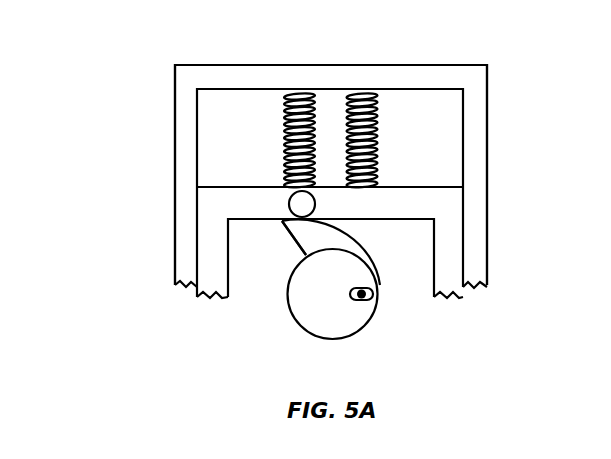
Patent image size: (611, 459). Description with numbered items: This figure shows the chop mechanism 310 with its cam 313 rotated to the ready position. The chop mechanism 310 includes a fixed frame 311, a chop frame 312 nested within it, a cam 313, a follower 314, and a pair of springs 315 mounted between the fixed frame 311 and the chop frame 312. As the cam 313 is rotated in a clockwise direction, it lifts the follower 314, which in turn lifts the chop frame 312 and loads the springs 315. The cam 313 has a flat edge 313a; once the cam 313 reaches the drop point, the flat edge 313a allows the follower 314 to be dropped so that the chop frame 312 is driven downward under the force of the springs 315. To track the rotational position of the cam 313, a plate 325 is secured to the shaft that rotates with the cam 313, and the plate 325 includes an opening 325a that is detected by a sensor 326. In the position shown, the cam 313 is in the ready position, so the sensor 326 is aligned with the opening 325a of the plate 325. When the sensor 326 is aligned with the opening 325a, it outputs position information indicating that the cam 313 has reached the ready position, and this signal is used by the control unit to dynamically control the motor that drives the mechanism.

The chop mechanism 310 is at (120, 90).
The fixed frame 311 is at (488, 135).
The chop frame 312 is at (465, 270).
The cam 313 is at (380, 283).
The flat edge 313a is at (298, 247).
The follower 314 is at (288, 200).
The springs 315 is at (282, 138).
The plate 325 is at (353, 305).
The opening 325a is at (380, 302).
The sensor 326 is at (350, 301).